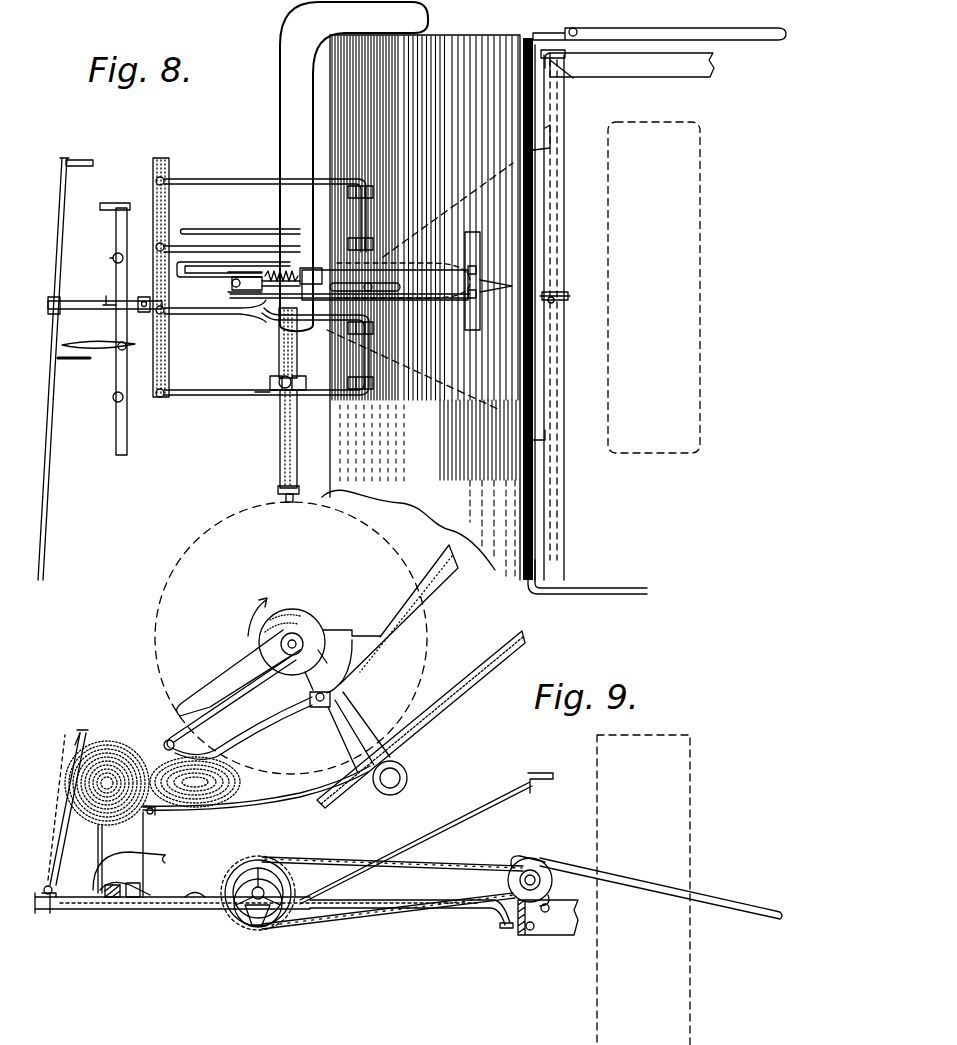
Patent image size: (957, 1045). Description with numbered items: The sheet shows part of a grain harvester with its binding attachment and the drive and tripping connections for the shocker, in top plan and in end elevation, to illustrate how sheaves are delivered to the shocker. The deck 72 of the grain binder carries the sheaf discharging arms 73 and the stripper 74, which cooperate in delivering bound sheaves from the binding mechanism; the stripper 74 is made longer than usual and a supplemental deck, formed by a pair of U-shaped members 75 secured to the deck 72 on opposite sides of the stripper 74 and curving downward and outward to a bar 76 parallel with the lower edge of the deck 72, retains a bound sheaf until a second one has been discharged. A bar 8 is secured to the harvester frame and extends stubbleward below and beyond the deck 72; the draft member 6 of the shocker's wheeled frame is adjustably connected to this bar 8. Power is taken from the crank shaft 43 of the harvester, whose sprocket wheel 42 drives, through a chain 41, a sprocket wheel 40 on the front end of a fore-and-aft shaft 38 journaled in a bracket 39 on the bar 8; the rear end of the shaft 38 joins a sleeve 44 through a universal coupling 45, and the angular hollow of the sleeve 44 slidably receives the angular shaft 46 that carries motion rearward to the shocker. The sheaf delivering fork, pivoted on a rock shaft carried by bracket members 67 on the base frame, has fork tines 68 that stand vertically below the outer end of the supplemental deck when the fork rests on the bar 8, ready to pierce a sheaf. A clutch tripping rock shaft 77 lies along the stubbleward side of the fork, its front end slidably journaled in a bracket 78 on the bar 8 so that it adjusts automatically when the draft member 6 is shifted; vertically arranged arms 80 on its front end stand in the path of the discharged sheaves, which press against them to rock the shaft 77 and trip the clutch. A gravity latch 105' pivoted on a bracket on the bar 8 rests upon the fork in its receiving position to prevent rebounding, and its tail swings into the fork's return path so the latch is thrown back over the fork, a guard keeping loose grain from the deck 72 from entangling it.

In FIG. 9, the draft member 6 is at (188, 893).
In FIG. 8, the bar 8 is at (84, 301).
In FIG. 9, the bar 8 is at (78, 911).
In FIG. 8, the shaft 38 is at (268, 393).
In FIG. 9, the shaft 38 is at (258, 926).
In FIG. 8, the bracket 39 is at (279, 338).
In FIG. 9, the bracket 39 is at (222, 916).
In FIG. 8, the sprocket wheel 40 is at (252, 306).
In FIG. 9, the sprocket wheel 40 is at (262, 860).
In FIG. 9, the chain 41 is at (340, 860).
In FIG. 8, the sprocket wheel 42 is at (566, 298).
In FIG. 9, the sprocket wheel 42 is at (508, 882).
In FIG. 8, the crank shaft 43 is at (578, 72).
In FIG. 9, the crank shaft 43 is at (560, 876).
In FIG. 8, the sleeve 44 is at (280, 428).
In FIG. 8, the universal coupling 45 is at (288, 376).
In FIG. 8, the angular shaft 46 is at (284, 498).
In FIG. 8, the bracket members 67 is at (116, 420).
In FIG. 8, the fork tines 68 is at (112, 252).
In FIG. 9, the fork tines 68 is at (103, 856).
In FIG. 8, the deck 72 is at (472, 46).
In FIG. 9, the deck 72 is at (444, 703).
In FIG. 8, the sheaf discharging arms 73 is at (210, 232).
In FIG. 8, the stripper 74 is at (242, 246).
In FIG. 9, the stripper 74 is at (258, 738).
In FIG. 8, the U-shaped members 75 is at (206, 181).
In FIG. 9, the U-shaped members 75 is at (236, 820).
In FIG. 8, the bar 76 is at (170, 215).
In FIG. 9, the bar 76 is at (158, 815).
In FIG. 8, the clutch tripping rock shaft 77 is at (50, 498).
In FIG. 9, the clutch tripping rock shaft 77 is at (56, 866).
In FIG. 8, the bracket 78 is at (58, 297).
In FIG. 9, the bracket 78 is at (58, 892).
In FIG. 8, the vertically arranged arms 80 is at (86, 168).
In FIG. 9, the vertically arranged arms 80 is at (86, 735).
In FIG. 8, the gravity latch 105' is at (107, 282).
In FIG. 9, the gravity latch 105' is at (112, 867).